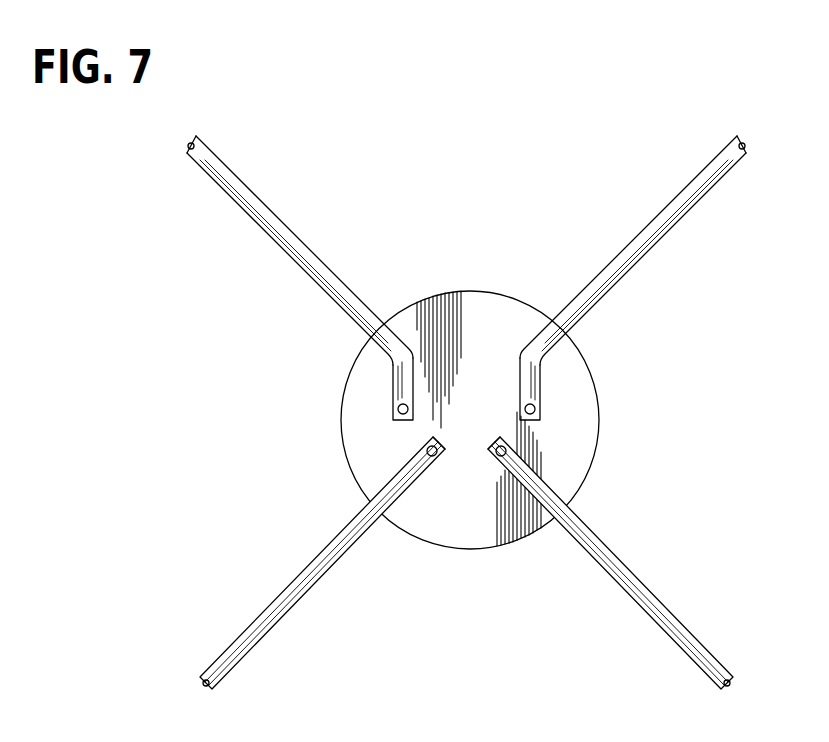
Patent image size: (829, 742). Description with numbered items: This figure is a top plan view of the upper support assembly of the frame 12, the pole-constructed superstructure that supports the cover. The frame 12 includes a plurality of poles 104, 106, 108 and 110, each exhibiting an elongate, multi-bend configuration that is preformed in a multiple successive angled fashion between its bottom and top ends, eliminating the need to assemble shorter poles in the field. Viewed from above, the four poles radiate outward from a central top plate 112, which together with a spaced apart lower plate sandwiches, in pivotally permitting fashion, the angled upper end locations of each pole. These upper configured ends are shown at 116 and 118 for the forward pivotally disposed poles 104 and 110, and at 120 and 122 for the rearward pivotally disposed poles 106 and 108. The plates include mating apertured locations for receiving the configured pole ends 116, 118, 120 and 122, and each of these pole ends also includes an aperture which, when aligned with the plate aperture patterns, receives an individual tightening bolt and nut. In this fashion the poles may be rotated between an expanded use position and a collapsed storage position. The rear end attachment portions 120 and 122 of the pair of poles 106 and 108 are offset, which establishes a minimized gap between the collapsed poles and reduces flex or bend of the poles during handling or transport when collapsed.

The frame 12 is at (395, 193).
The pole 104 is at (268, 621).
The pole 106 is at (258, 215).
The pole 108 is at (683, 217).
The pole 110 is at (628, 594).
The top plate 112 is at (481, 307).
The upper configured end 116 is at (410, 478).
The upper configured end 118 is at (512, 476).
The rear end attachment portion 120 is at (396, 392).
The rear end attachment portion 122 is at (540, 394).